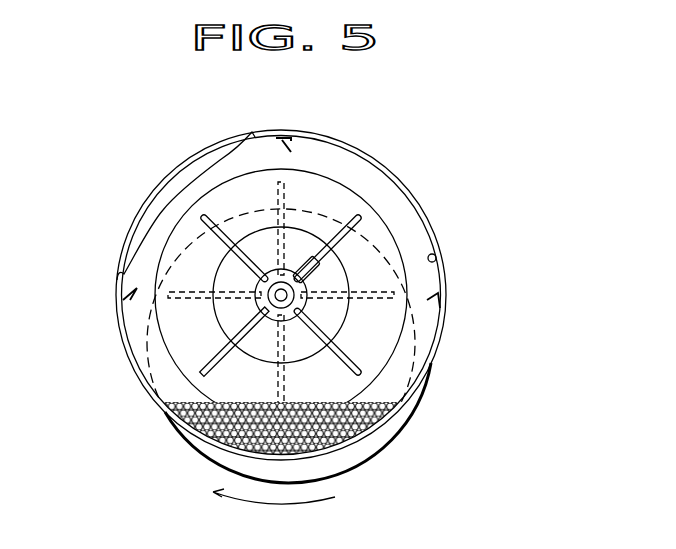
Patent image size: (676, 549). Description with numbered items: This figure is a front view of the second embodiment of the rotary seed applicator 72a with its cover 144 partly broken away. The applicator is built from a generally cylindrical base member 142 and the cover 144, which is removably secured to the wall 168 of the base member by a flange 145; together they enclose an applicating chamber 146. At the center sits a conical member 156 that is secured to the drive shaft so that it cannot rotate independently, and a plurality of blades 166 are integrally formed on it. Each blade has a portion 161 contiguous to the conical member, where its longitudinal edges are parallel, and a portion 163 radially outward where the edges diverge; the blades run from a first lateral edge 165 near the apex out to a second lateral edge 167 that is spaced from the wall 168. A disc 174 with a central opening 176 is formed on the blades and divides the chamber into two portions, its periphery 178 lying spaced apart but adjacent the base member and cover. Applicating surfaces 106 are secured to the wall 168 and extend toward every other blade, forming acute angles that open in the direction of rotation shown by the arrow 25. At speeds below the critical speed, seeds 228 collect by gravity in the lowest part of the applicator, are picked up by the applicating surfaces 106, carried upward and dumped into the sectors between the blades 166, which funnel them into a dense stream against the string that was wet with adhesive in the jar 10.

The jar 10 is at (400, 423).
The arrow 25 is at (275, 503).
The rotary seed applicator 72a is at (395, 172).
The applicating surfaces 106 is at (441, 309).
The base member 142 is at (375, 158).
The cover 144 is at (123, 216).
The flange 145 is at (173, 161).
The applicating chamber 146 is at (380, 238).
The conical member 156 is at (297, 303).
The portion of blade contiguous to conical member 161 is at (303, 257).
The portion of blade radially outward 163 is at (337, 223).
The first lateral edge 165 is at (293, 290).
The blades 166 is at (366, 294).
The second lateral edge 167 is at (208, 203).
The wall 168 is at (437, 256).
The disc 174 is at (402, 343).
The central opening 176 is at (268, 313).
The periphery 178 is at (317, 170).
The seeds 228 is at (345, 450).